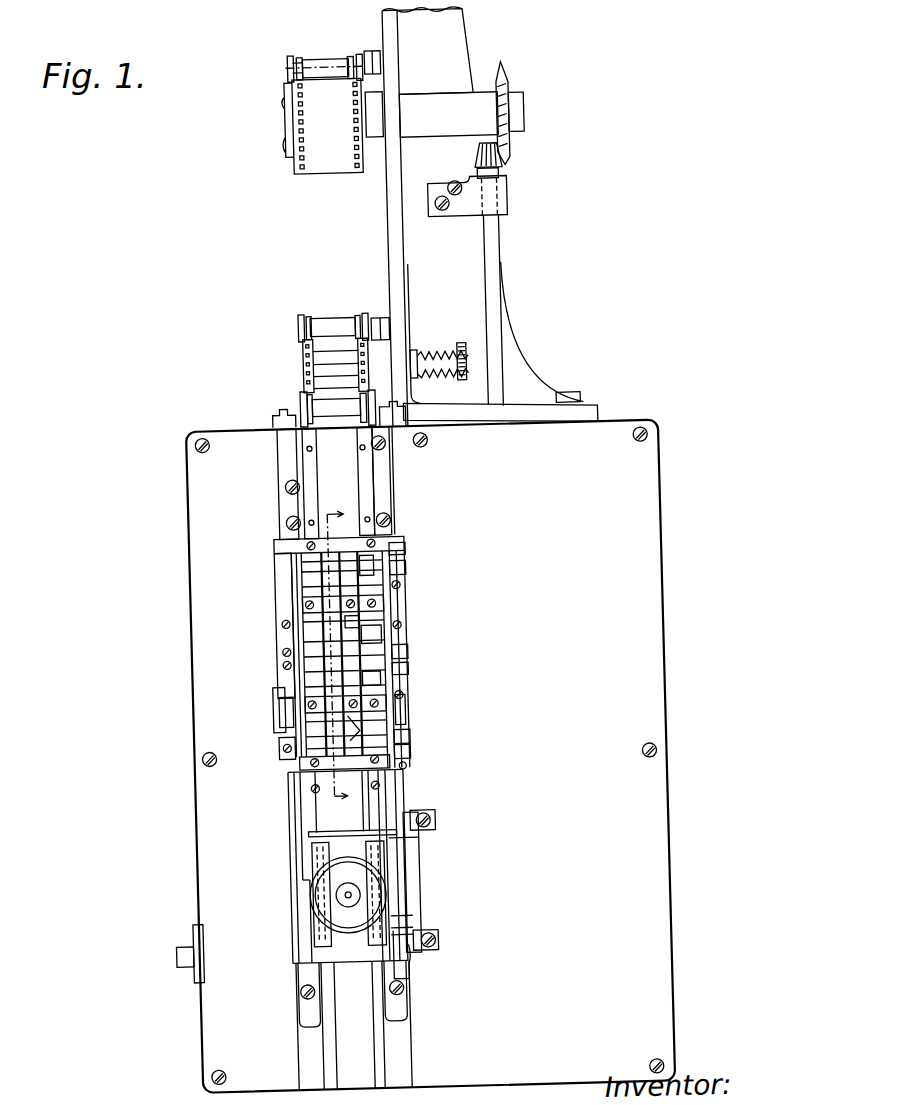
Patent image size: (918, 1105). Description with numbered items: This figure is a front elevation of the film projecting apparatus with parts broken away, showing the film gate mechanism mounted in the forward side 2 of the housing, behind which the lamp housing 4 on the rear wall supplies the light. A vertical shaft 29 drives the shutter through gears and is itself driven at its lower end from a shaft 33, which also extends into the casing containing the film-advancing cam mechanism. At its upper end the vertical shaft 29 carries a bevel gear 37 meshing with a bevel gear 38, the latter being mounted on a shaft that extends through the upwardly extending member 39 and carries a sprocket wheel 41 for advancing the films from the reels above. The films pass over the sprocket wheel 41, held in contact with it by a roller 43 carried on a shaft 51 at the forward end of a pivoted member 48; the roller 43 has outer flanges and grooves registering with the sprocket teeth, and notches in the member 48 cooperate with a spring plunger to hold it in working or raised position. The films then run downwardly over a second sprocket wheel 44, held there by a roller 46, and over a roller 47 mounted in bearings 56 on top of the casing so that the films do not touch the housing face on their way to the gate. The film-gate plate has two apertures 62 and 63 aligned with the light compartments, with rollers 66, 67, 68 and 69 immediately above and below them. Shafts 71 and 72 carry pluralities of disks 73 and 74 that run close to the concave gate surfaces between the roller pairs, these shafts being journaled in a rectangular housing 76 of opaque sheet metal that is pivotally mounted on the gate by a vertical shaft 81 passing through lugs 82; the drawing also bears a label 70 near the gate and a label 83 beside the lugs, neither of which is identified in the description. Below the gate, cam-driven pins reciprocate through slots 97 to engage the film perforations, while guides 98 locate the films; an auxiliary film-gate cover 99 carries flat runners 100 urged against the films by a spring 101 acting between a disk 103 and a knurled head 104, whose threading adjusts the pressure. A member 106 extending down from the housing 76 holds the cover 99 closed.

The forward side 2 is at (612, 445).
The lamp housing 4 is at (345, 653).
The vertical shaft 29 is at (506, 302).
The shaft 33 is at (170, 950).
The bevel gear 37 is at (509, 165).
The bevel gear 38 is at (517, 86).
The upwardly extending member 39 is at (400, 34).
The sprocket wheel 41 is at (320, 165).
The roller 43 is at (330, 63).
The sprocket wheel 44 is at (303, 365).
The roller 46 is at (328, 322).
The roller 47 is at (305, 410).
The member 48 is at (374, 60).
The shaft 51 is at (300, 66).
The bearings 56 is at (272, 420).
The aperture 62 is at (355, 624).
The aperture 63 is at (355, 730).
The roller 66 is at (372, 568).
The roller 67 is at (378, 640).
The roller 68 is at (376, 683).
The roller 69 is at (398, 774).
The tension spring 70 is at (408, 538).
The shaft 71 is at (281, 627).
The shaft 72 is at (300, 735).
The disks 73 is at (300, 592).
The disks 74 is at (278, 670).
The rectangular housing 76 is at (270, 700).
The vertical shaft 81 is at (400, 712).
The lugs 82 is at (404, 574).
The guide shoe 83 is at (404, 554).
The slots 97 is at (300, 935).
The guides 98 is at (355, 1008).
The auxiliary film-gate cover 99 is at (398, 893).
The runners 100 is at (396, 850).
The spring 101 is at (338, 899).
The disk 103 is at (305, 906).
The knurled head 104 is at (318, 899).
The member 106 is at (292, 822).